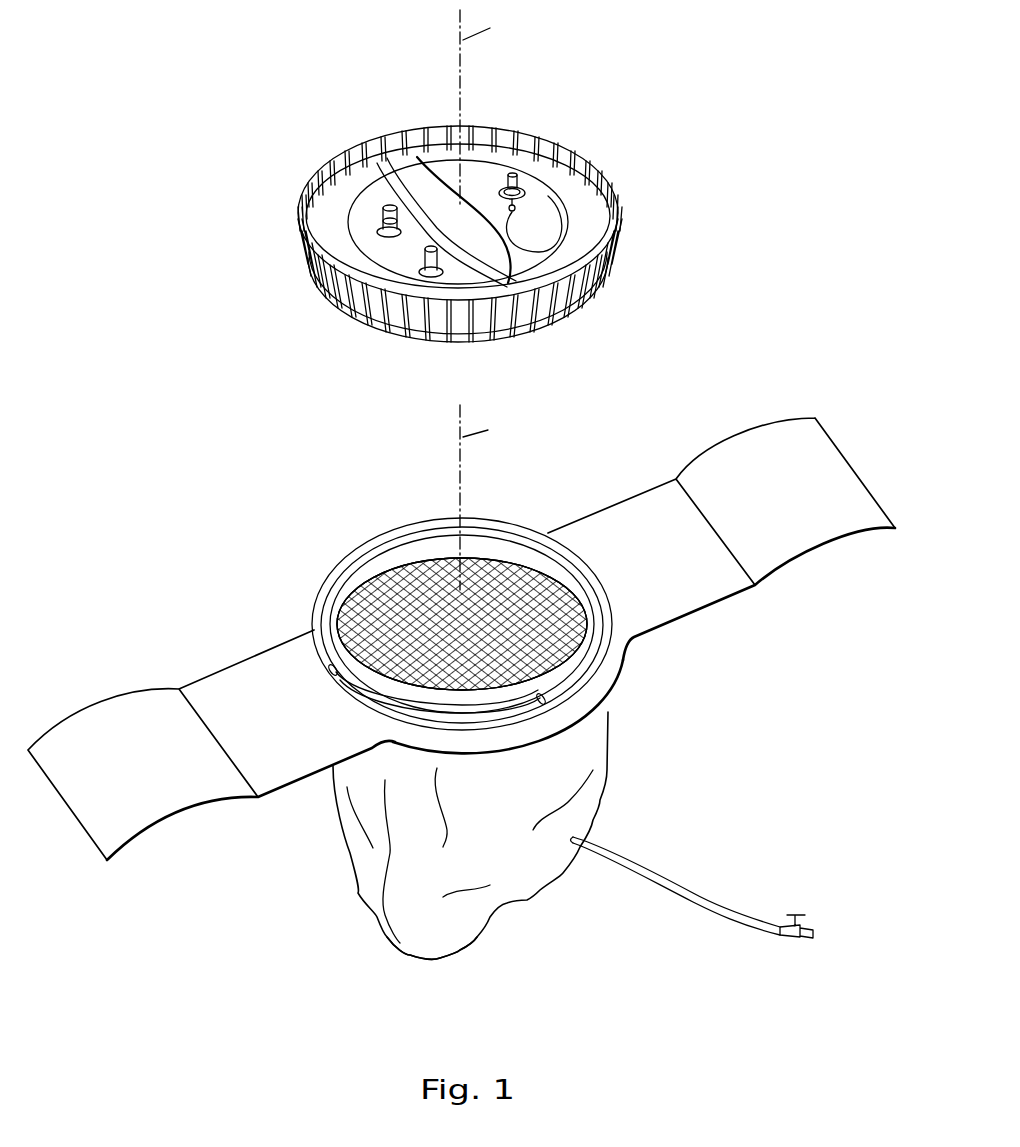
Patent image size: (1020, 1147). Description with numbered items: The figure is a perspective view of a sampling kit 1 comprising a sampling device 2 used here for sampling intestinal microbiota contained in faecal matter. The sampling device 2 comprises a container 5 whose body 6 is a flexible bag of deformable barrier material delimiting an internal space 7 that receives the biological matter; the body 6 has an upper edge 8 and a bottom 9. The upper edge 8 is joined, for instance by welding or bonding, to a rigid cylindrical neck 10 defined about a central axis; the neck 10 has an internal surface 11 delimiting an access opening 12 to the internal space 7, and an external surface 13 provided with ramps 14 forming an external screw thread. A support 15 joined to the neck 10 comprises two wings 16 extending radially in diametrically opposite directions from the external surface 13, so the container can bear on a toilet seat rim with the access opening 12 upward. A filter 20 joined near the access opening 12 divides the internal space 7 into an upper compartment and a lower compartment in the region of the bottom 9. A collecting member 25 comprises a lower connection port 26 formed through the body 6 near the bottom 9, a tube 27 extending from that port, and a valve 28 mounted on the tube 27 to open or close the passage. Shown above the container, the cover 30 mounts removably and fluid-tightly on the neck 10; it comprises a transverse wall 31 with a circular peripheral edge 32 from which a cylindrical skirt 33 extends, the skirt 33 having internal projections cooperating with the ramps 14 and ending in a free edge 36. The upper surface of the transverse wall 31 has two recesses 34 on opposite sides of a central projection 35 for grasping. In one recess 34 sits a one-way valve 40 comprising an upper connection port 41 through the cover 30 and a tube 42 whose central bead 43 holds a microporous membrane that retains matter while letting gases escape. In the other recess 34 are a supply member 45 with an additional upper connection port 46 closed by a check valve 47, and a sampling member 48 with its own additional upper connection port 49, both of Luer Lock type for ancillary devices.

The sampling kit 1 is at (160, 1034).
The sampling device 2 is at (157, 450).
The container 5 is at (726, 712).
The body 6 is at (352, 847).
The internal space 7 is at (482, 619).
The upper edge 8 is at (387, 550).
The bottom 9 is at (476, 940).
The cylindrical neck 10 is at (345, 552).
The internal surface 11 is at (330, 597).
The access opening 12 is at (423, 544).
The external surface 13 is at (575, 668).
The ramps 14 is at (573, 693).
The support 15 is at (806, 386).
The wings 16 is at (717, 590).
The filter 20 is at (522, 593).
The collecting member 25 is at (723, 847).
The lower connection port 26 is at (587, 830).
The tube 27 is at (705, 912).
The valve 28 is at (795, 940).
The cover 30 is at (247, 208).
The transverse wall 31 is at (470, 208).
The circular peripheral edge 32 is at (592, 173).
The cylindrical skirt 33 is at (607, 277).
The recesses 34 is at (540, 228).
The central projection 35 is at (420, 180).
The free edge 36 is at (568, 317).
The one-way valve 40 is at (540, 179).
The upper connection port 41 is at (557, 248).
The tube 42 is at (520, 173).
The central bead 43 is at (528, 197).
The supply member 45 is at (352, 213).
The additional upper connection port 46 is at (378, 230).
The check valve 47 is at (383, 217).
The sampling member 48 is at (417, 276).
The additional upper connection port 49 is at (437, 282).